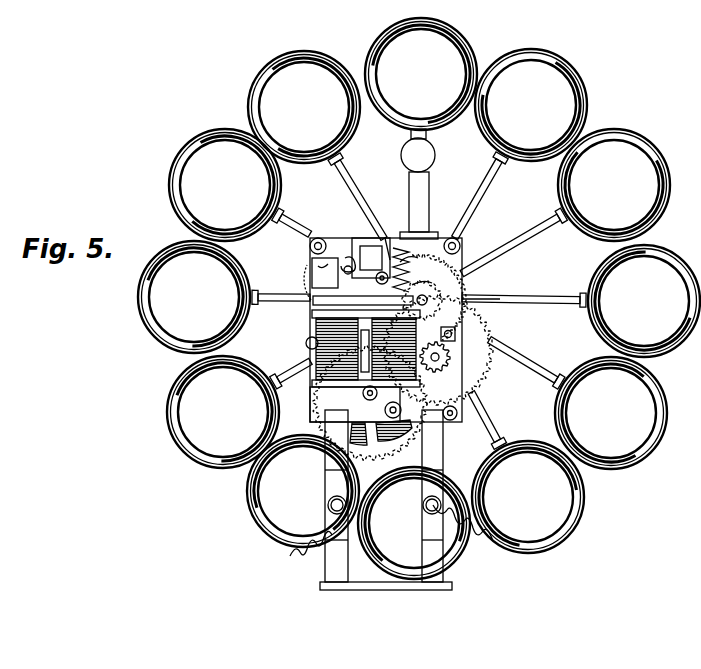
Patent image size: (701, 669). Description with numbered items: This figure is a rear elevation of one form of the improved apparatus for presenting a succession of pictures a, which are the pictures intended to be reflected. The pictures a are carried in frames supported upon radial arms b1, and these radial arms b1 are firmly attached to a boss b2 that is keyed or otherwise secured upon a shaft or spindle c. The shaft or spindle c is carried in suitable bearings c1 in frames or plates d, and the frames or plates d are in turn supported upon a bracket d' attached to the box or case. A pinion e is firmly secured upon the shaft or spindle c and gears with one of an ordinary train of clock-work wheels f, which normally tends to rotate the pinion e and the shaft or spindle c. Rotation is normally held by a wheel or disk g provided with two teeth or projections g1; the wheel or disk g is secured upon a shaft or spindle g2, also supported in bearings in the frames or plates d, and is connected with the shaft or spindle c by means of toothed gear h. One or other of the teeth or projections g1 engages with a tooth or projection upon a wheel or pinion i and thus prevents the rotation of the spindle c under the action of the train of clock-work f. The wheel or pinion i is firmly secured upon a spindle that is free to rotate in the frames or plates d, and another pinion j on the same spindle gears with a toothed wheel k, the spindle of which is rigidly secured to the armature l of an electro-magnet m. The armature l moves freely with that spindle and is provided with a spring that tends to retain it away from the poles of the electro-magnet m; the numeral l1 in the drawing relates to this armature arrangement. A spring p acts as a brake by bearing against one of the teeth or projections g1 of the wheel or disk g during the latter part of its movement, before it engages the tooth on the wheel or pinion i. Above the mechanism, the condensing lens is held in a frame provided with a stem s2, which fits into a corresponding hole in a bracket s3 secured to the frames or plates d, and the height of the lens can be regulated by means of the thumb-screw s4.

The pictures a is at (416, 304).
The radial arms b1 is at (380, 200).
The boss b2 is at (490, 336).
The stem s2 is at (411, 134).
The bracket s3 is at (429, 186).
The thumb-screw s4 is at (418, 155).
The frames or plates d is at (391, 410).
The bracket d' is at (386, 599).
The toothed gear h is at (363, 291).
The electro-magnet m is at (318, 355).
The train of clock-work wheels f is at (494, 342).
The shaft or spindle c is at (442, 299).
The bearings c1 is at (458, 262).
The pinion e is at (478, 299).
The wheel or disk g is at (345, 257).
The teeth or projections g1 is at (428, 283).
The shaft or spindle g2 is at (392, 235).
The spring l1 is at (411, 253).
The spring p is at (349, 266).
The pinion j is at (330, 262).
The wheel or pinion i is at (330, 268).
The toothed wheel k is at (311, 305).
The armature l is at (310, 325).